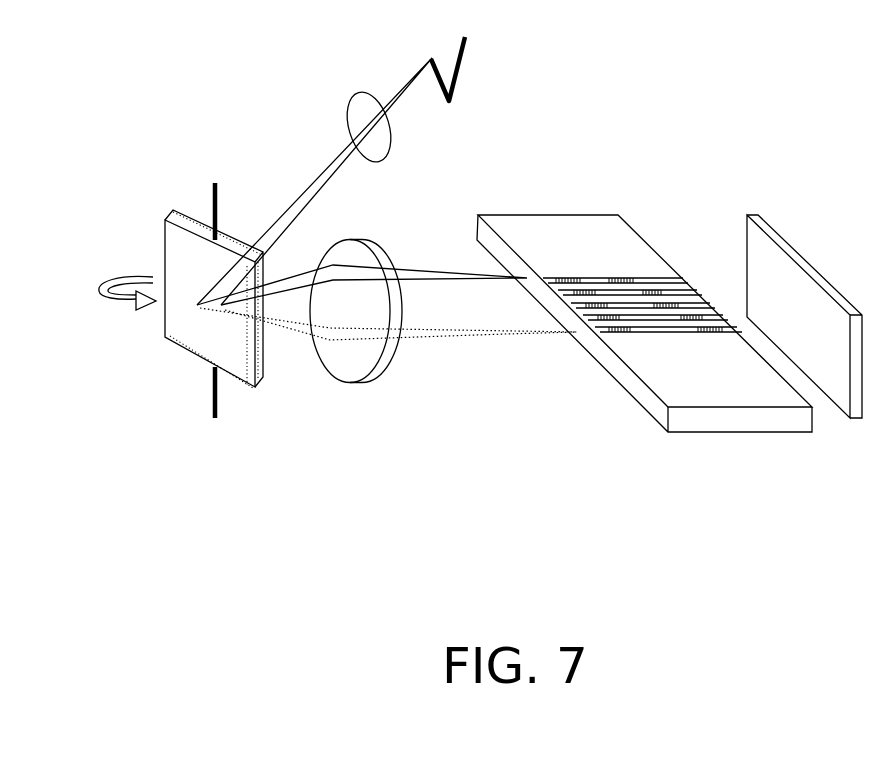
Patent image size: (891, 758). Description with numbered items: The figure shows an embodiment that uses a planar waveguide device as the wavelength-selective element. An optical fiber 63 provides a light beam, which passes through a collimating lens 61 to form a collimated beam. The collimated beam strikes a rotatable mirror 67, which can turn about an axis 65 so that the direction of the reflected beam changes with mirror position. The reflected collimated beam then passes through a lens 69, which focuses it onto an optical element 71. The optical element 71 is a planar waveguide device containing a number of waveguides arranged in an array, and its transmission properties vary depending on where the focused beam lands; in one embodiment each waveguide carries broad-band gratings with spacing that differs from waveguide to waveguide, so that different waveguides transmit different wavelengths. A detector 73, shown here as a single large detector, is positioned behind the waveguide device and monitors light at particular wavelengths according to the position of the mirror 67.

The collimating lens 61 is at (352, 101).
The optical fiber 63 is at (451, 104).
The axis 65 is at (209, 190).
The rotatable mirror 67 is at (158, 268).
The lens 69 is at (373, 382).
The optical element 71 is at (667, 433).
The detector 73 is at (857, 420).